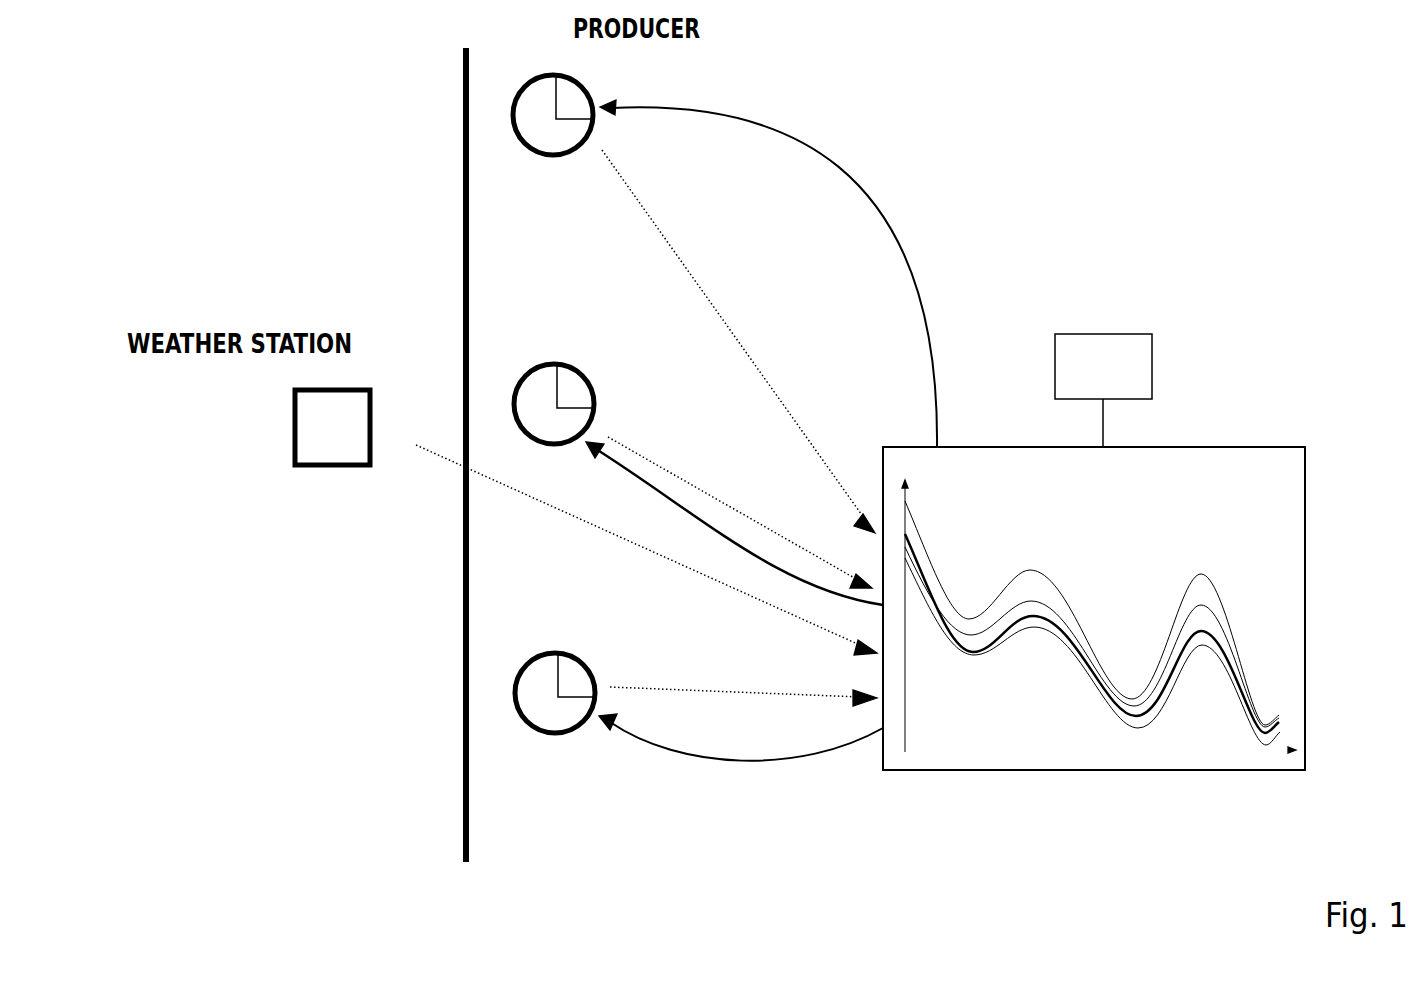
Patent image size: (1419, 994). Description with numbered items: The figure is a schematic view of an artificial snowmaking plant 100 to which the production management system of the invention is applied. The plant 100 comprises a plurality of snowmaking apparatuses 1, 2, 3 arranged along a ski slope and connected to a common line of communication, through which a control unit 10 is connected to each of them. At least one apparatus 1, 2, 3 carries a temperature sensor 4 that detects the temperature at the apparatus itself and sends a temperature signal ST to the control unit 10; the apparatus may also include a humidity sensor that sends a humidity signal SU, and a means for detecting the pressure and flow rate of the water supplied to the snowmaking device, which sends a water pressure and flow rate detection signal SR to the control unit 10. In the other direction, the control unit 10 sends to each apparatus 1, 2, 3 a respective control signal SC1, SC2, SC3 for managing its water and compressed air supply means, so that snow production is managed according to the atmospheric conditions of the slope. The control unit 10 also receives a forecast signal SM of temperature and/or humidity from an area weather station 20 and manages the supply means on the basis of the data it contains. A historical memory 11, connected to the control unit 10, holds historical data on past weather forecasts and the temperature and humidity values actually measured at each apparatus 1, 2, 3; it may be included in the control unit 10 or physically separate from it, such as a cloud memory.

The snowmaking apparatus 1 is at (528, 70).
The snowmaking apparatus 2 is at (538, 356).
The snowmaking apparatus 3 is at (535, 640).
The temperature sensor 4 is at (575, 386).
The control unit 10 is at (1243, 438).
The historical memory 11 is at (1103, 390).
The weather station 20 is at (332, 427).
The snowmaking plant 100 is at (990, 168).
The temperature signal ST is at (647, 210).
The humidity signal SU is at (678, 255).
The water pressure and flow rate detection signal SR is at (717, 312).
The forecast signal SM is at (503, 482).
The control signal SC1 is at (823, 163).
The control signal SC2 is at (670, 518).
The control signal SC3 is at (690, 762).